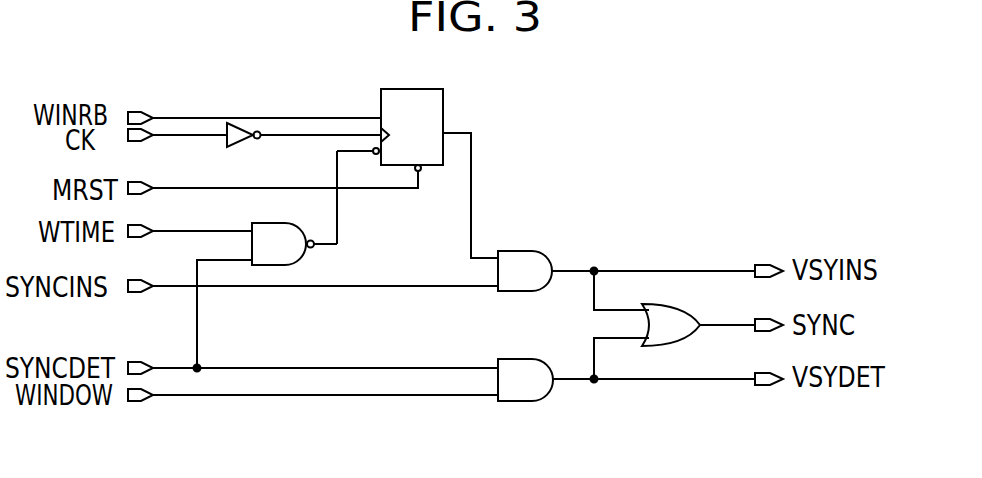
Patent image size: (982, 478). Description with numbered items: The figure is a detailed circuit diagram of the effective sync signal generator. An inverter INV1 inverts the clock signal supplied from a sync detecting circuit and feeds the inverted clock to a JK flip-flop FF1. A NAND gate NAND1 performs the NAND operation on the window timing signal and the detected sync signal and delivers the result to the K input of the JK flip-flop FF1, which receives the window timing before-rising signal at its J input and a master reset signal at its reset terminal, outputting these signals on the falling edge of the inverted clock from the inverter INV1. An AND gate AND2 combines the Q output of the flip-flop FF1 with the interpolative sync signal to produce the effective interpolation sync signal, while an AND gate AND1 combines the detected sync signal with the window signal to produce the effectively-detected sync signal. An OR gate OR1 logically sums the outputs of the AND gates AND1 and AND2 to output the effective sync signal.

The JK flip-flop FF1 is at (443, 103).
The inverter INV1 is at (237, 147).
The NAND gate NAND1 is at (305, 258).
The AND gate AND1 is at (530, 359).
The AND gate AND2 is at (530, 251).
The OR gate OR1 is at (672, 346).